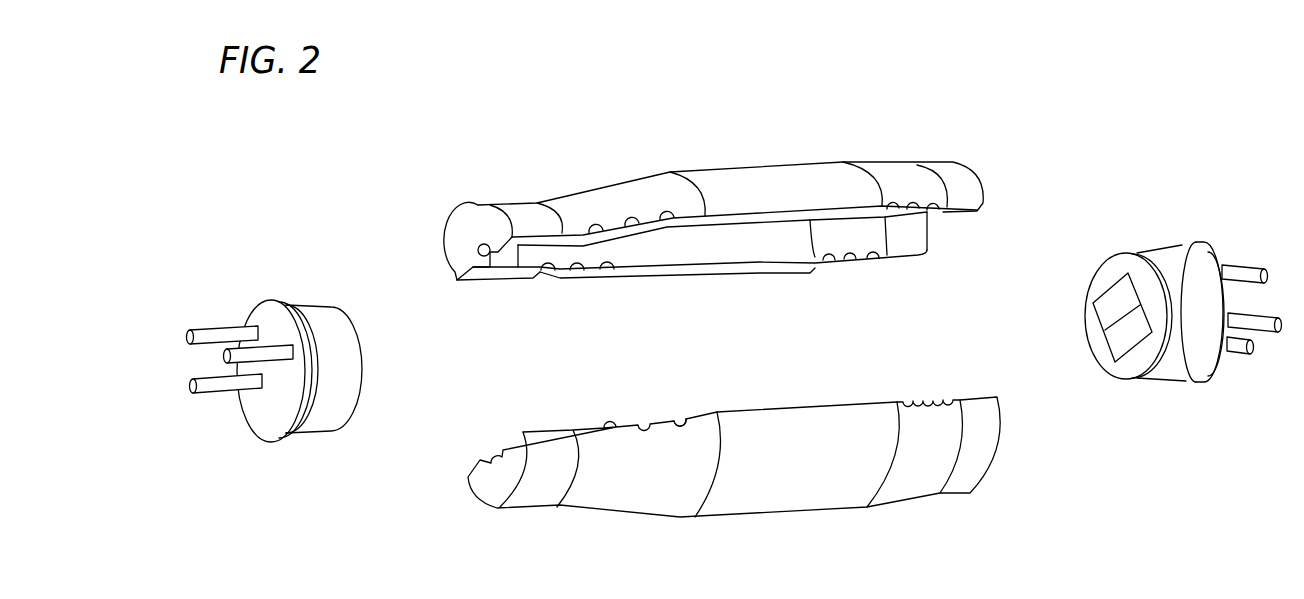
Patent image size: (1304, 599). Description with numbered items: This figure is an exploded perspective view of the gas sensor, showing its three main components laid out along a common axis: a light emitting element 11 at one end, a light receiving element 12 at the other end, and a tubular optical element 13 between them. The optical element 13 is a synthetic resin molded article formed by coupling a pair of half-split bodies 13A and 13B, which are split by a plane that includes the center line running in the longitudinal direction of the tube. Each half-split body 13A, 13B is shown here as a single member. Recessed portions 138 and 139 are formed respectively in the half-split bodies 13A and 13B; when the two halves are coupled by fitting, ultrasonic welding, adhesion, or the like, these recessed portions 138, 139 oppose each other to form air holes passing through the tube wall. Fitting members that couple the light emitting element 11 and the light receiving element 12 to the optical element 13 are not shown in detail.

The light emitting element 11 is at (318, 420).
The light receiving element 12 is at (1162, 367).
The optical element 13 is at (824, 153).
The half-split body 13A is at (713, 216).
The half-split body 13B is at (734, 466).
The recessed portion 138 is at (663, 225).
The recessed portion 139 is at (680, 420).